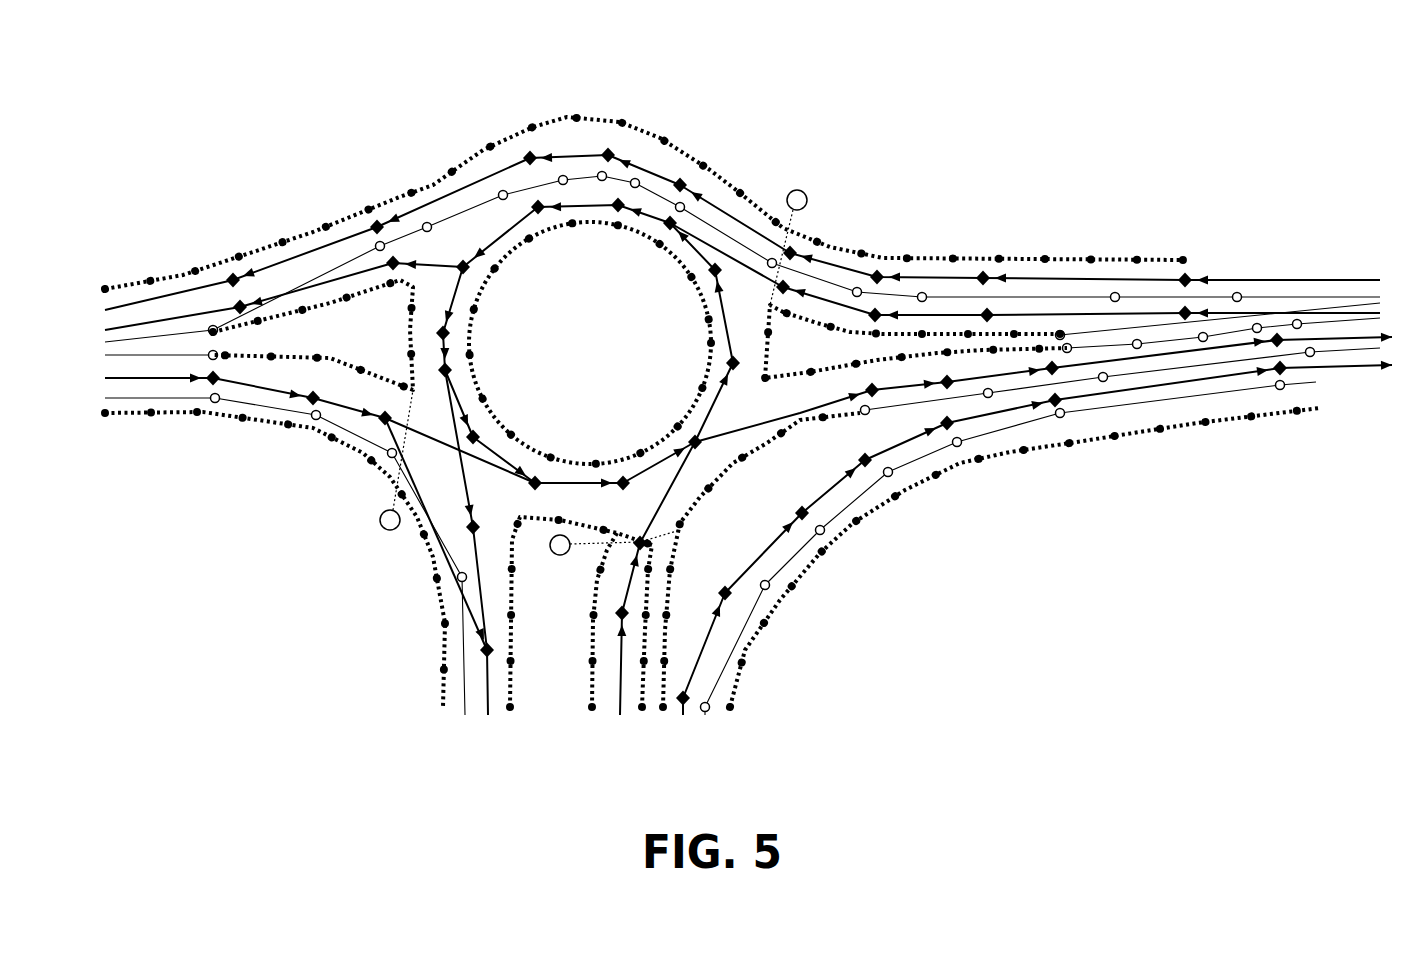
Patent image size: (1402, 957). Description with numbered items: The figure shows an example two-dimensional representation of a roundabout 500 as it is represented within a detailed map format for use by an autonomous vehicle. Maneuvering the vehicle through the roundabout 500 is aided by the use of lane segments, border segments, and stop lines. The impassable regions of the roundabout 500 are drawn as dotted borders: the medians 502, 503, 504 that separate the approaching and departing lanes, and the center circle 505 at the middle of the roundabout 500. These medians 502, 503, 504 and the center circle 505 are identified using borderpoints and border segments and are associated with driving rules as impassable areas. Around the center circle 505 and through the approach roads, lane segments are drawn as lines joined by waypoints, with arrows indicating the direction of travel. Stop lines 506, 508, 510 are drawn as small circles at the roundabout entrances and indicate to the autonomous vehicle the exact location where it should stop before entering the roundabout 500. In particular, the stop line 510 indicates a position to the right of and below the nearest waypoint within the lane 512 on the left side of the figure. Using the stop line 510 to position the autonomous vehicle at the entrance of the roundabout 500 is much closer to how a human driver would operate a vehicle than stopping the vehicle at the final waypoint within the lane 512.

The roundabout 500 is at (677, 112).
The median 502 is at (823, 351).
The median 503 is at (748, 512).
The median 504 is at (375, 339).
The center circle 505 is at (607, 334).
The stop line 506 is at (782, 262).
The stop line 508 is at (634, 540).
The stop line 510 is at (414, 523).
The lane 512 is at (257, 358).